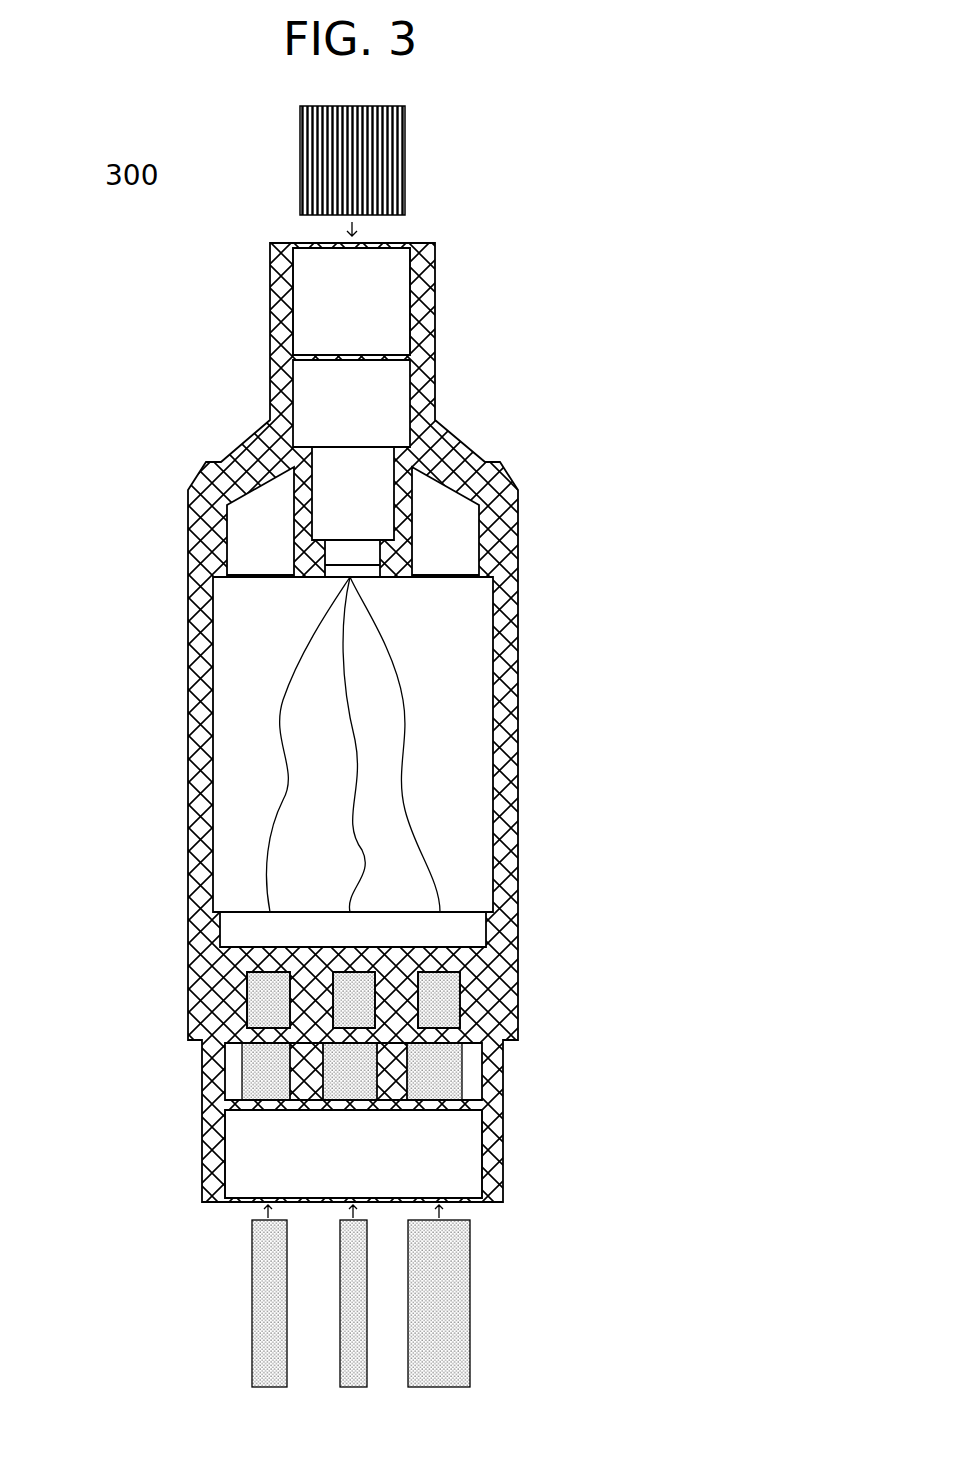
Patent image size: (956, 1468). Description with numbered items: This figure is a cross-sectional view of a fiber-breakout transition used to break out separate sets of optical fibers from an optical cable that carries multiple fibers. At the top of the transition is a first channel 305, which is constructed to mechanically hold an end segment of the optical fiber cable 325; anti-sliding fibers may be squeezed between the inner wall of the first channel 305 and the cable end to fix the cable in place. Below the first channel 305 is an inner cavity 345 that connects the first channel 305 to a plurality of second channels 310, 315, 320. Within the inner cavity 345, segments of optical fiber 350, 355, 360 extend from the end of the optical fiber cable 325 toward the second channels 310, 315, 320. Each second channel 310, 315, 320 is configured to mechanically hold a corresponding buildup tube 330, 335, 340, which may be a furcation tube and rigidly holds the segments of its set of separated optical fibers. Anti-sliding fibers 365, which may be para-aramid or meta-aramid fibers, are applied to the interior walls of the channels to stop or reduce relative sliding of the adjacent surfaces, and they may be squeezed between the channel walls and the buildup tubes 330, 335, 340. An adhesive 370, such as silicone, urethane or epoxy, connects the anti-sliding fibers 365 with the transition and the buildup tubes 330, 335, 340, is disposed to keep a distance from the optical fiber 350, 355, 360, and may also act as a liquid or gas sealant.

The first channel 305 is at (353, 318).
The second channel 310 is at (268, 982).
The second channel 315 is at (354, 982).
The second channel 320 is at (439, 982).
The optical fiber cable 325 is at (395, 130).
The buildup tube 330 is at (265, 1257).
The buildup tube 335 is at (348, 1337).
The buildup tube 340 is at (472, 1310).
The inner cavity 345 is at (447, 620).
The segment of optical fiber 350 is at (272, 712).
The segment of optical fiber 355 is at (338, 802).
The segment of optical fiber 360 is at (437, 838).
The anti-sliding fibers 365 is at (298, 1082).
The adhesive 370 is at (375, 1090).